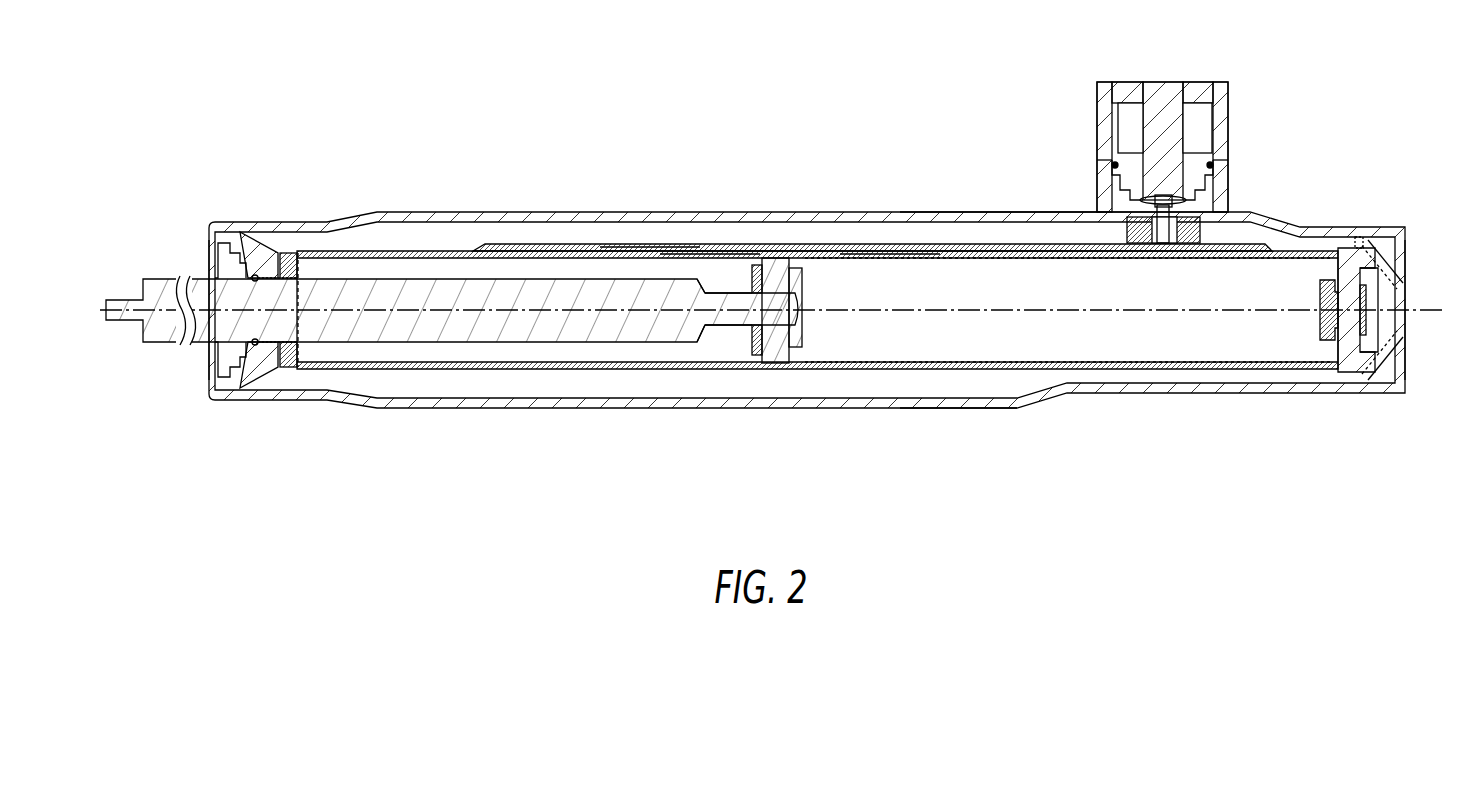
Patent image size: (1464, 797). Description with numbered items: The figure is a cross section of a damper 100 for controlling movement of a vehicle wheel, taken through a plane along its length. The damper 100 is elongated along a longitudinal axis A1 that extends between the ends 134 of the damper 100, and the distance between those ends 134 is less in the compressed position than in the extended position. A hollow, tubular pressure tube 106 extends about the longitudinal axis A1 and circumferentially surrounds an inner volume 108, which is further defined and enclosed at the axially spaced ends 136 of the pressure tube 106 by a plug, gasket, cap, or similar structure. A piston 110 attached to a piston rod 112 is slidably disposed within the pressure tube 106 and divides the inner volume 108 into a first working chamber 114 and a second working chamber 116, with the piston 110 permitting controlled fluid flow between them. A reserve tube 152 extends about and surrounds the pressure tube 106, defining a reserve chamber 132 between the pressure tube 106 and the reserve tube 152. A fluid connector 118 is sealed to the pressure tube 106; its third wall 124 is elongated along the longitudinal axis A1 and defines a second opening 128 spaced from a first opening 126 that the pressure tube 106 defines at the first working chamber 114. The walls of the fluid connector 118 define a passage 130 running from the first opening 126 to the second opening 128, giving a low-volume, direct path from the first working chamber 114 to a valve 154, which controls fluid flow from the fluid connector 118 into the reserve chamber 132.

The damper 100 is at (500, 58).
The pressure tube 106 is at (394, 253).
The inner volume 108 is at (985, 368).
The piston 110 is at (777, 272).
The piston rod 112 is at (495, 315).
The first working chamber 114 is at (727, 347).
The second working chamber 116 is at (910, 340).
The fluid connector 118 is at (708, 245).
The third wall 124 is at (645, 245).
The first opening 126 is at (572, 255).
The second opening 128 is at (1162, 245).
The passage 130 is at (887, 250).
The reserve chamber 132 is at (1005, 233).
The ends 134 is at (105, 318).
The ends of the pressure tube 136 is at (290, 360).
The reserve tube 152 is at (252, 222).
The valve 154 is at (1168, 150).
The longitudinal axis A1 is at (1418, 305).